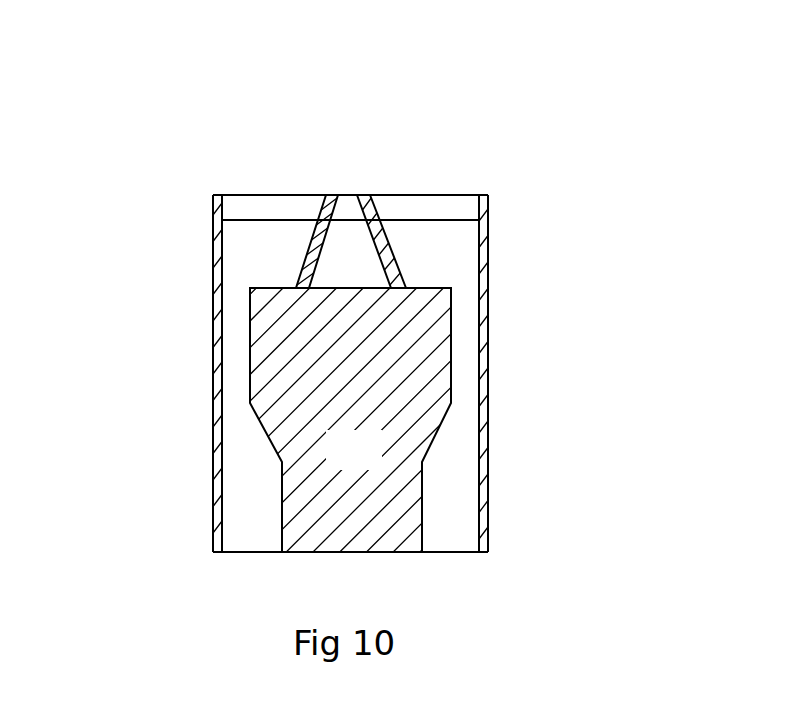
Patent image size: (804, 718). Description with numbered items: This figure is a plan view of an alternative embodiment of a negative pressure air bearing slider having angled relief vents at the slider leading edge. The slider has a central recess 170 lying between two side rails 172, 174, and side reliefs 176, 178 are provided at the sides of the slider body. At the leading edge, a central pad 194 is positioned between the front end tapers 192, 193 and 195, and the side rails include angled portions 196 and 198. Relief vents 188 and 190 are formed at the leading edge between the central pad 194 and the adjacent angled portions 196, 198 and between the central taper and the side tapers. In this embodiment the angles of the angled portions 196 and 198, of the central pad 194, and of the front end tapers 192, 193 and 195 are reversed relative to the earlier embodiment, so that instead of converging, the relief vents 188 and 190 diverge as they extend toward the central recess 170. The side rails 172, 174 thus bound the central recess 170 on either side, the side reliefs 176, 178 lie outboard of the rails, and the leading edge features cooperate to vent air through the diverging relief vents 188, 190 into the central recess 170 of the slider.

The central recess 170 is at (375, 465).
The side rail 172 is at (278, 519).
The side rail 174 is at (475, 519).
The side relief 176 is at (213, 370).
The side relief 178 is at (488, 335).
The relief vent 188 is at (337, 197).
The relief vent 190 is at (367, 201).
The front end taper 192 is at (263, 203).
The front end taper 193 is at (348, 197).
The central pad 194 is at (373, 280).
The front end taper 195 is at (452, 210).
The angled portion 196 is at (247, 263).
The angled portion 198 is at (465, 268).